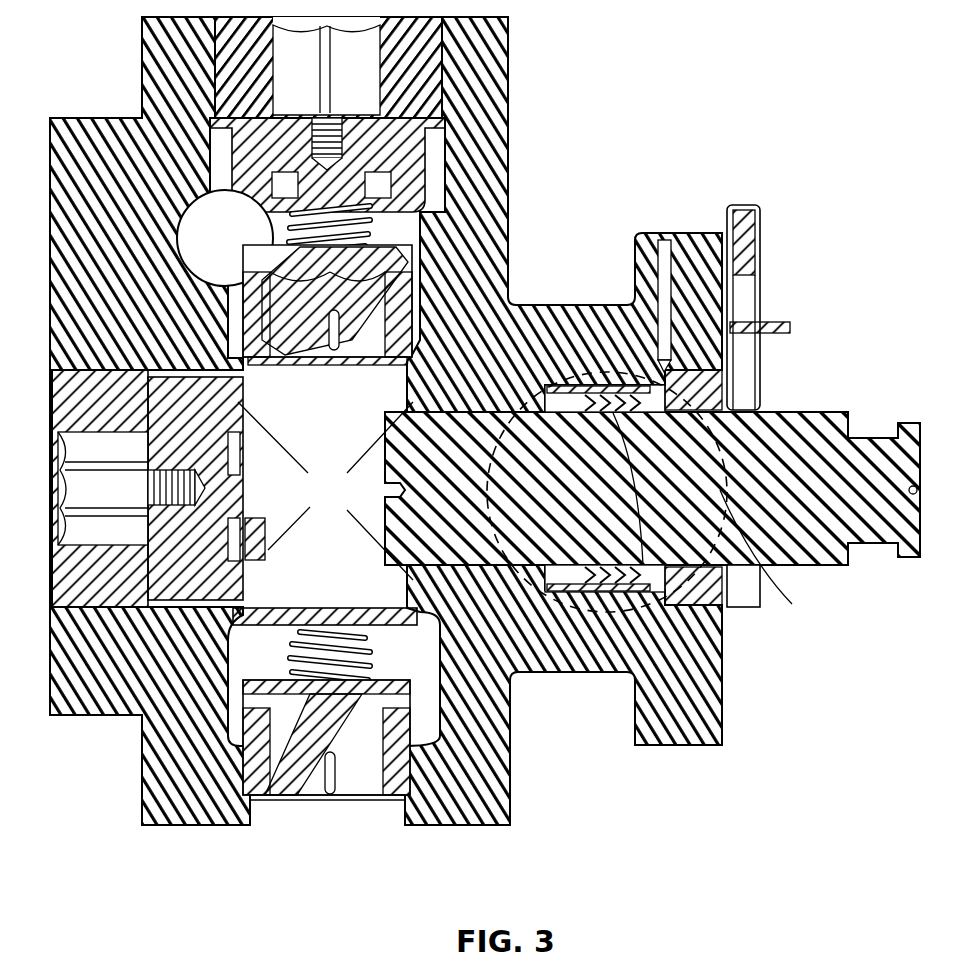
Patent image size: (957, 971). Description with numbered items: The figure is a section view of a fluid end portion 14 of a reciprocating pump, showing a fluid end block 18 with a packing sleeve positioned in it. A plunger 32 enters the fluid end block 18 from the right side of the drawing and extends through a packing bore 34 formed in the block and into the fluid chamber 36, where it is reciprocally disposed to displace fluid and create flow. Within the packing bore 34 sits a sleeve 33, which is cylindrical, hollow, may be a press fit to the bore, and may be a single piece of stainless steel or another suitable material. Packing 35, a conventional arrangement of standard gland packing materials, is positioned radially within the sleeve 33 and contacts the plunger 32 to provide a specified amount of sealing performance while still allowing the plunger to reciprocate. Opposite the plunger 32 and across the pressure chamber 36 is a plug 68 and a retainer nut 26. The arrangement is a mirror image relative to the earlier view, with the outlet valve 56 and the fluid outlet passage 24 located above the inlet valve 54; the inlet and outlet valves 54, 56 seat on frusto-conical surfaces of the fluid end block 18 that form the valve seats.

The fluid end portion 14 is at (463, 456).
The fluid end block 18 is at (493, 180).
The fluid outlet passage 24 is at (233, 251).
The retainer nut 26 is at (78, 572).
The plunger 32 is at (789, 430).
The packing sleeve 33 is at (600, 392).
The packing bore 34 is at (468, 402).
The packing 35 is at (653, 412).
The fluid chamber 36 is at (343, 507).
The inlet valve 54 is at (357, 748).
The outlet valve 56 is at (372, 257).
The plug 68 is at (170, 443).